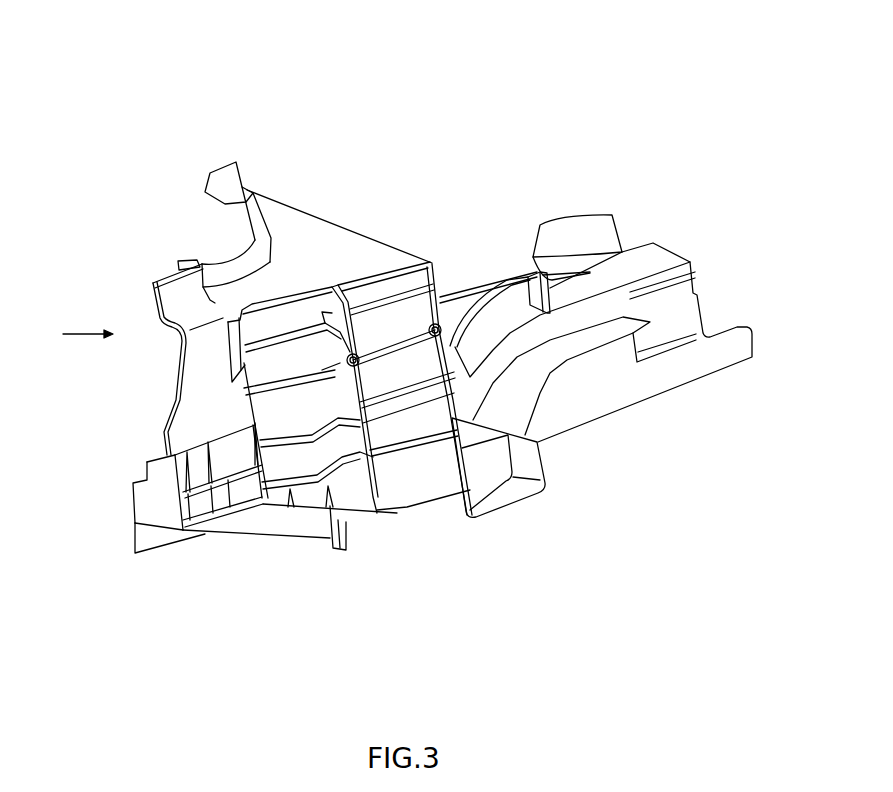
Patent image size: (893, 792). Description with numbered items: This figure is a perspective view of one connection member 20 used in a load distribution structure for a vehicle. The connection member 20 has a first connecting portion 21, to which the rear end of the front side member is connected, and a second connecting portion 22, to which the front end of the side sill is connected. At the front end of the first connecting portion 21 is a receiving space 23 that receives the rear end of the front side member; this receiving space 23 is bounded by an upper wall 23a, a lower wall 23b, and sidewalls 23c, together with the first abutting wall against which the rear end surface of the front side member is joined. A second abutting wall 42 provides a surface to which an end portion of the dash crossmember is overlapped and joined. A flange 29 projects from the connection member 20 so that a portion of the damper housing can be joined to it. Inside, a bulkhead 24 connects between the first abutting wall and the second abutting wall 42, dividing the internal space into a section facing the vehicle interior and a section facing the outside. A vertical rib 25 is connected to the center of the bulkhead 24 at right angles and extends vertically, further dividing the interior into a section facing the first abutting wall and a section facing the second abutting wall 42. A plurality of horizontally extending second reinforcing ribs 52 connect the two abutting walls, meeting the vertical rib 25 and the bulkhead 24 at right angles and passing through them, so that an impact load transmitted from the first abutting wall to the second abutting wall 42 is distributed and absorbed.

The connection member 20 is at (102, 61).
The first connecting portion 21 is at (138, 570).
The second connecting portion 22 is at (657, 226).
The receiving space 23 is at (164, 397).
The upper wall 23a is at (163, 332).
The lower wall 23b is at (145, 478).
The sidewalls 23c is at (213, 420).
The bulkhead 24 is at (293, 317).
The vertical rib 25 is at (343, 400).
The flange 29 is at (243, 193).
The second abutting wall 42 is at (434, 272).
The second reinforcing ribs 52 is at (360, 307).